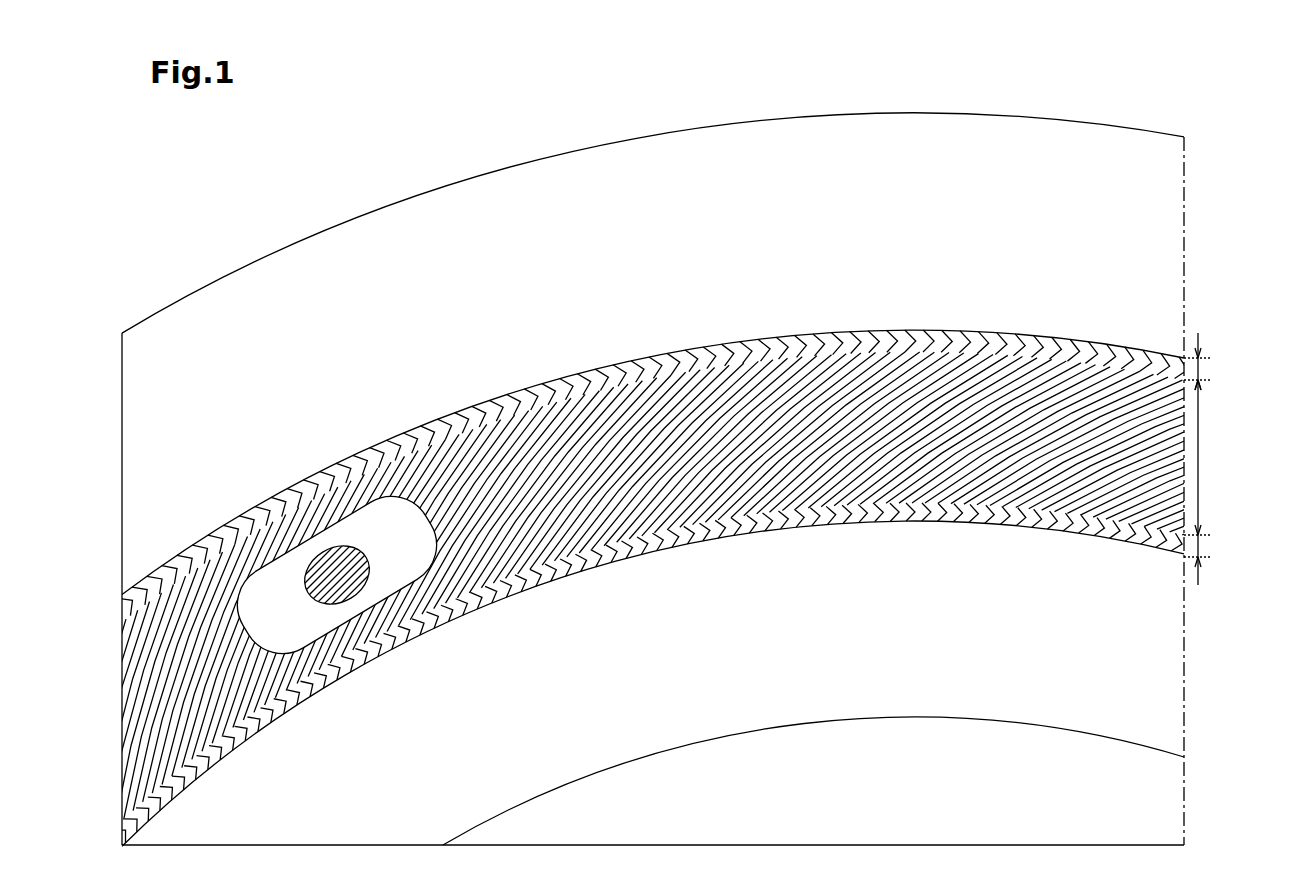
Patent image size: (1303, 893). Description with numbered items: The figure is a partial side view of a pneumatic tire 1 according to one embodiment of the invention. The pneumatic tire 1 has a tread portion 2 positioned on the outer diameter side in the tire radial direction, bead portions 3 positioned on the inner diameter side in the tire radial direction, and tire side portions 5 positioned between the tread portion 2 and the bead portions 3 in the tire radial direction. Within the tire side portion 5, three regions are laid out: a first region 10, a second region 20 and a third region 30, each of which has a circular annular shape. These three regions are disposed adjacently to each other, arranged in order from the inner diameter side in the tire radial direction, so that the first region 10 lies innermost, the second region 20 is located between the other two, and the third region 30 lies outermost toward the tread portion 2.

The pneumatic tire 1 is at (307, 213).
The tread portion 2 is at (448, 186).
The bead portions 3 is at (890, 682).
The tire side portions 5 is at (307, 380).
The first region 10 is at (1198, 547).
The second region 20 is at (1198, 452).
The third region 30 is at (1198, 368).